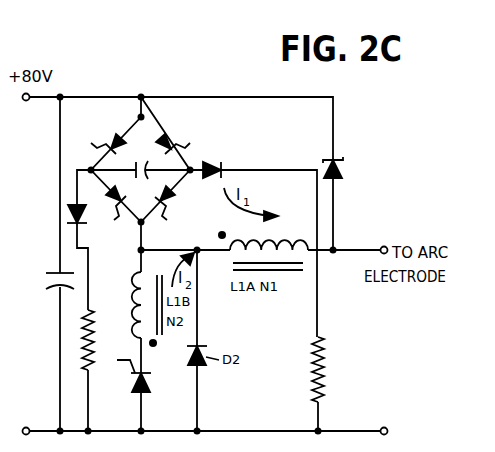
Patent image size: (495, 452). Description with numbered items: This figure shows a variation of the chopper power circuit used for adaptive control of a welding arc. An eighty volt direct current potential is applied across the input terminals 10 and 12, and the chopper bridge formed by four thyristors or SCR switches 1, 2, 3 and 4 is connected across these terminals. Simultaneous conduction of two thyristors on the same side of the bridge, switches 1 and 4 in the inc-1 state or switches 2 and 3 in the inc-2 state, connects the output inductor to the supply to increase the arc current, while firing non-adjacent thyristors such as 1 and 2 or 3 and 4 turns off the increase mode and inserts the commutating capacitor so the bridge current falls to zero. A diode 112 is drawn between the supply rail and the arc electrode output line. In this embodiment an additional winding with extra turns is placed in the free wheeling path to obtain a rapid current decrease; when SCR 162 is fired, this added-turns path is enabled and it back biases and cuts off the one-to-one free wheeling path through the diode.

The input terminal 10 is at (27, 101).
The input terminal 12 is at (26, 427).
The thyristor 1 is at (110, 141).
The thyristor 2 is at (170, 199).
The thyristor 3 is at (169, 139).
The thyristor 4 is at (104, 202).
The zener diode 112 is at (341, 173).
The SCR 162 is at (129, 386).